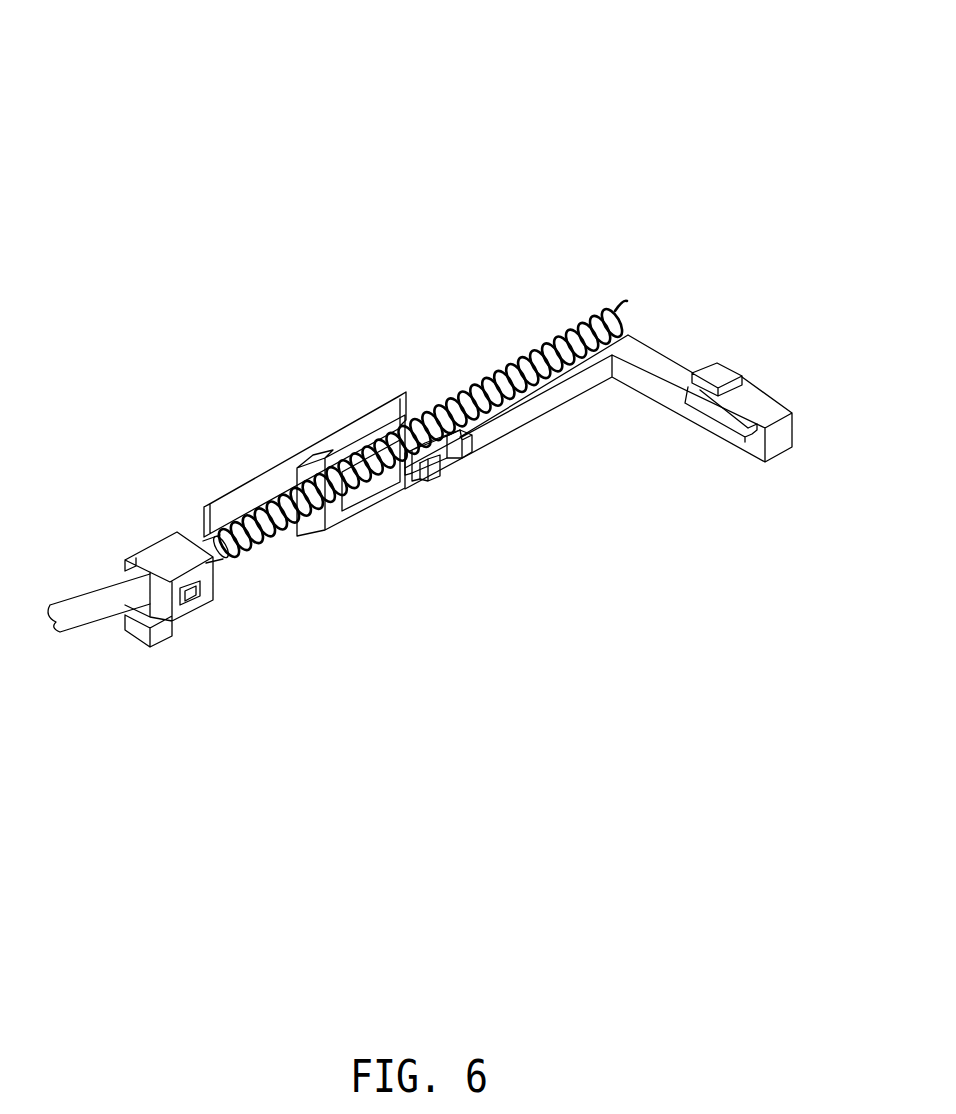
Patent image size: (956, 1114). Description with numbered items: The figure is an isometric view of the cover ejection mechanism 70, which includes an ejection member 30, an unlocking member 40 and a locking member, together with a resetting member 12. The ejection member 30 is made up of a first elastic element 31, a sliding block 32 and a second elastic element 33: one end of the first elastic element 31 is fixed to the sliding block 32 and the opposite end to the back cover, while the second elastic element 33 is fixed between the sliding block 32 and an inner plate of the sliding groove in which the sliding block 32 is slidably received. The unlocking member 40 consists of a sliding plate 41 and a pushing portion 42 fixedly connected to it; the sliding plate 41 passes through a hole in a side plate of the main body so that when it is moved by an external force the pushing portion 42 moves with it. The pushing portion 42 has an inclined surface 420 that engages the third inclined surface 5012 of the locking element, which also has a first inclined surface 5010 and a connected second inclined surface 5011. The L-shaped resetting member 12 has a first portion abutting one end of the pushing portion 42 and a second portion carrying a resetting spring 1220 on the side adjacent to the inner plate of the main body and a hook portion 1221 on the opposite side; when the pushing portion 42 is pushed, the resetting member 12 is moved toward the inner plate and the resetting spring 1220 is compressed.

The cover ejection mechanism 70 is at (284, 52).
The resetting member 12 is at (641, 352).
The resetting spring 1220 is at (728, 363).
The hook portion 1221 is at (717, 416).
The ejection member 30 is at (167, 445).
The first elastic element 31 is at (73, 603).
The sliding block 32 is at (160, 550).
The second elastic element 33 is at (227, 520).
The unlocking member 40 is at (277, 347).
The sliding plate 41 is at (323, 440).
The pushing portion 42 is at (367, 447).
The first inclined surface 5010 is at (455, 455).
The second inclined surface 5011 is at (452, 436).
The third inclined surface 5012 is at (411, 478).
The inclined surface 420 is at (428, 476).